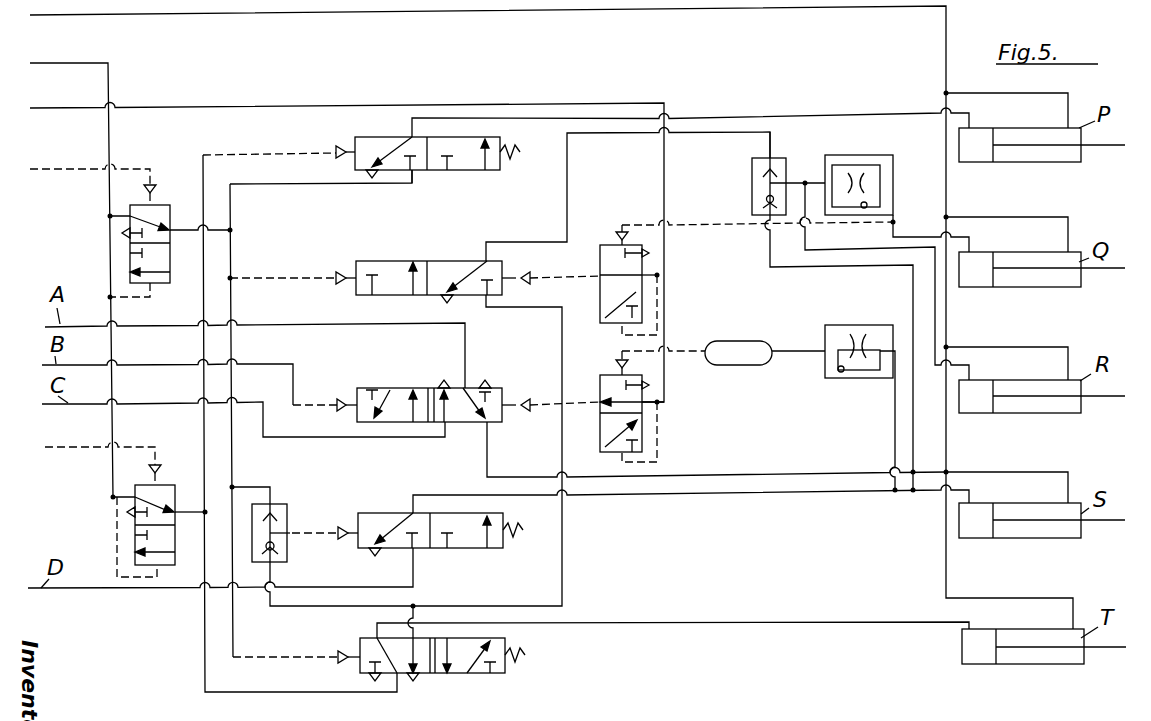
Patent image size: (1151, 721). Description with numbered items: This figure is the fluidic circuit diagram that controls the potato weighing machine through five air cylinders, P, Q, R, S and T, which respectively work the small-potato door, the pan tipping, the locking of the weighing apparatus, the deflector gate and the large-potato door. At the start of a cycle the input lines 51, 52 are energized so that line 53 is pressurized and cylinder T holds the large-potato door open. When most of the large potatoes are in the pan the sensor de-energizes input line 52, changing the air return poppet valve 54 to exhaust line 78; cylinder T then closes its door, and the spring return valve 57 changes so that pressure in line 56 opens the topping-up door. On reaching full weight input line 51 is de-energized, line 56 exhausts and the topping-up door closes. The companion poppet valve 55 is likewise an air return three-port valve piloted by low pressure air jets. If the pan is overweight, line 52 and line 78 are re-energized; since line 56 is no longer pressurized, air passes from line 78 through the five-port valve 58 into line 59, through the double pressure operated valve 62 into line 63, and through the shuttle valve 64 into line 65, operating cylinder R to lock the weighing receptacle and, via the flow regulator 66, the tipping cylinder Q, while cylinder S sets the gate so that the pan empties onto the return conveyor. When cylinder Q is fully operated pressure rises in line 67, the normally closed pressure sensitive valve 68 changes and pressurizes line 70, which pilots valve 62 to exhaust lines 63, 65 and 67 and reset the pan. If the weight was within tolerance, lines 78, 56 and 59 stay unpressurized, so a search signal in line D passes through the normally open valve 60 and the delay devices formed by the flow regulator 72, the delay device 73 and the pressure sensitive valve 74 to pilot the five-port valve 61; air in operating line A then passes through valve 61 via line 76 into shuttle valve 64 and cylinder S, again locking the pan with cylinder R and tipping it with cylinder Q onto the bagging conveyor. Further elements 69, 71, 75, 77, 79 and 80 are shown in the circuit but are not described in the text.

The input line 51 is at (36, 172).
The input line 52 is at (88, 444).
The line 53 is at (746, 620).
The air return valve 54 is at (135, 540).
The valve 55 is at (168, 203).
The line 56 is at (233, 206).
The valve 57 is at (468, 158).
The valve 58 is at (505, 668).
The line 59 is at (563, 560).
The valve 60 is at (389, 515).
The valve 61 is at (387, 392).
The valve 62 is at (387, 265).
The line 63 is at (588, 133).
The shuttle valve 64 is at (752, 184).
The line 65 is at (806, 240).
The flow regulator 66 is at (878, 168).
The line 67 is at (913, 236).
The valve 68 is at (612, 252).
The pressure line 69 is at (38, 112).
The line 70 is at (558, 276).
The connecting line 71 is at (722, 496).
The flow regulator 72 is at (858, 326).
The delay device 73 is at (730, 343).
The valve 74 is at (648, 437).
The pilot line 75 is at (548, 398).
The line 76 is at (782, 473).
The check valve 77 is at (290, 513).
The line 78 is at (203, 428).
The pressure line 79 is at (38, 67).
The main supply line 80 is at (36, 17).